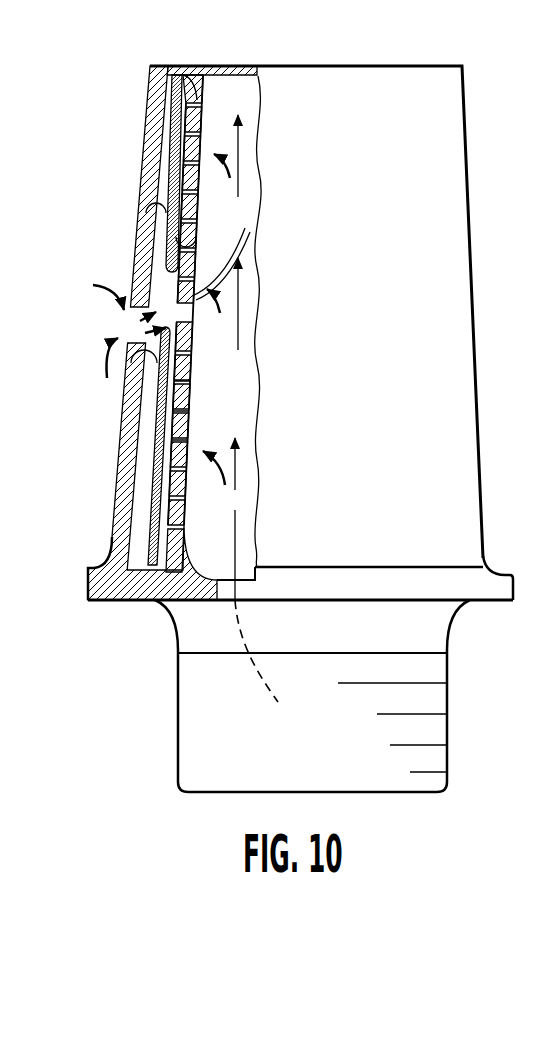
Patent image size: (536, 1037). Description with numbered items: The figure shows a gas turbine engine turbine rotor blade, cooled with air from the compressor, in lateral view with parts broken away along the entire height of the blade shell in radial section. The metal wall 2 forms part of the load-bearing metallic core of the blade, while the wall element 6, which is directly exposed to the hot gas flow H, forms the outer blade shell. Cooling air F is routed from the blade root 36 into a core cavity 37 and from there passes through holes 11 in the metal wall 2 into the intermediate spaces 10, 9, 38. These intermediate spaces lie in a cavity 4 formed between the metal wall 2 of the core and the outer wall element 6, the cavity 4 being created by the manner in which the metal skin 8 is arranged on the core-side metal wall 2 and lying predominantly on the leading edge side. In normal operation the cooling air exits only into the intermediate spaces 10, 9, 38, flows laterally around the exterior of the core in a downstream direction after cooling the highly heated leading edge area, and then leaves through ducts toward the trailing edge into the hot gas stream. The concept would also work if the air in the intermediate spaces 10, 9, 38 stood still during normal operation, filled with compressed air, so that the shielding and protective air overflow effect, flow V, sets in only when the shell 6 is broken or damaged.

The metal wall 2 is at (186, 518).
The cavity 4 is at (158, 267).
The wall element 6 is at (147, 162).
The metal skin 8 is at (163, 439).
The intermediate space 9 is at (148, 284).
The intermediate space 10 is at (203, 66).
The holes 11 is at (206, 430).
The blade root 36 is at (207, 722).
The core cavity 37 is at (231, 386).
The intermediate space 38 is at (168, 506).
The hot gas flow H is at (104, 358).
The flow V is at (246, 232).
The cooling air F is at (250, 642).